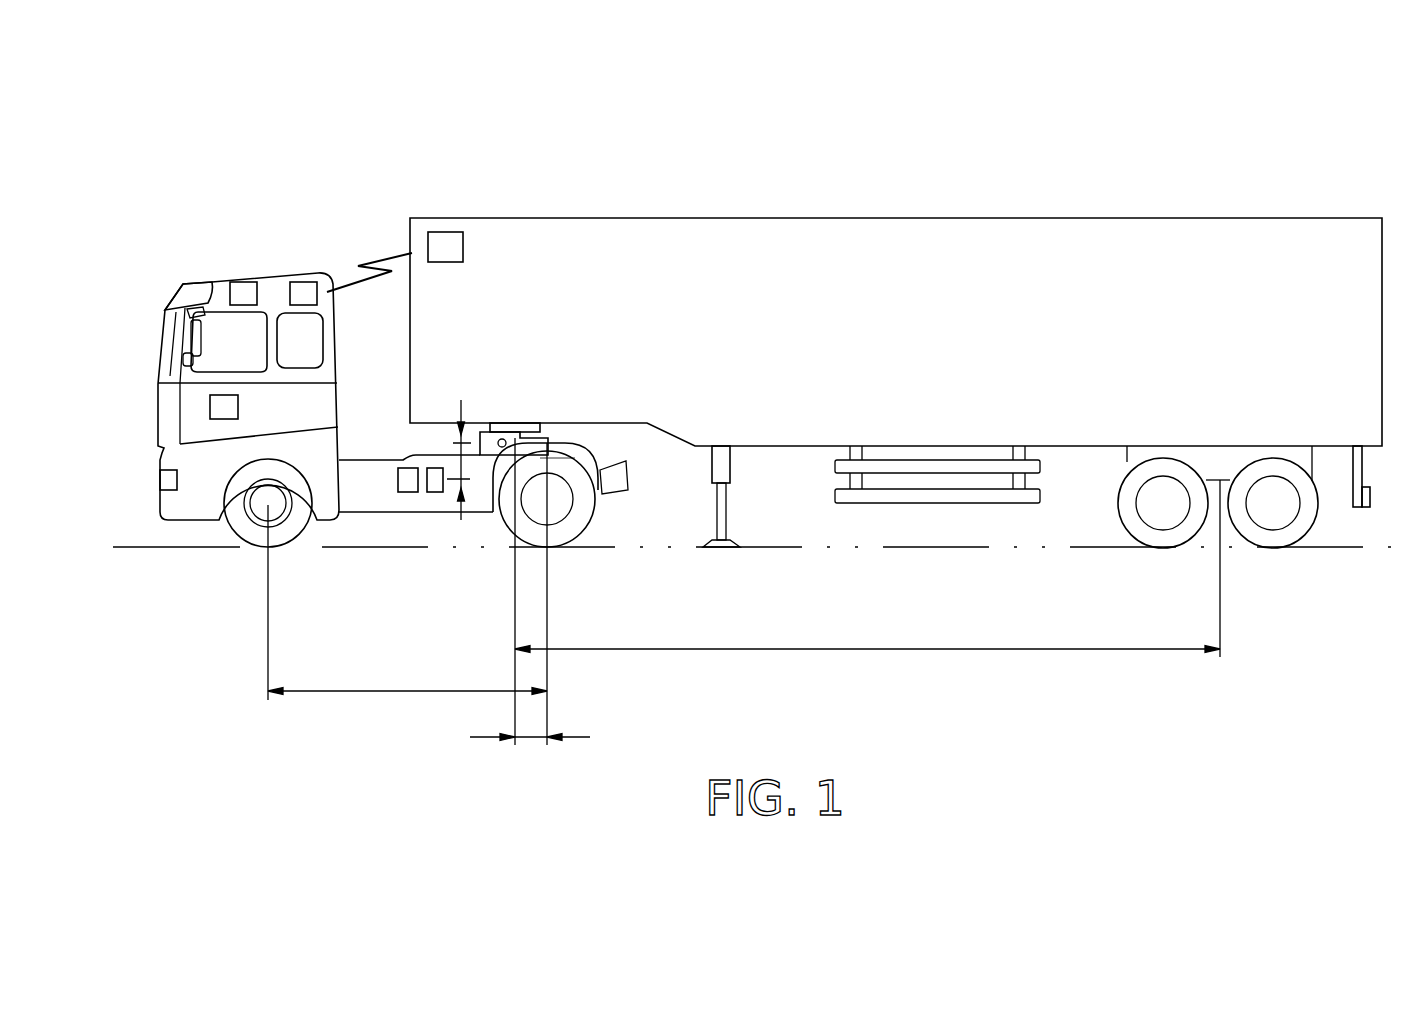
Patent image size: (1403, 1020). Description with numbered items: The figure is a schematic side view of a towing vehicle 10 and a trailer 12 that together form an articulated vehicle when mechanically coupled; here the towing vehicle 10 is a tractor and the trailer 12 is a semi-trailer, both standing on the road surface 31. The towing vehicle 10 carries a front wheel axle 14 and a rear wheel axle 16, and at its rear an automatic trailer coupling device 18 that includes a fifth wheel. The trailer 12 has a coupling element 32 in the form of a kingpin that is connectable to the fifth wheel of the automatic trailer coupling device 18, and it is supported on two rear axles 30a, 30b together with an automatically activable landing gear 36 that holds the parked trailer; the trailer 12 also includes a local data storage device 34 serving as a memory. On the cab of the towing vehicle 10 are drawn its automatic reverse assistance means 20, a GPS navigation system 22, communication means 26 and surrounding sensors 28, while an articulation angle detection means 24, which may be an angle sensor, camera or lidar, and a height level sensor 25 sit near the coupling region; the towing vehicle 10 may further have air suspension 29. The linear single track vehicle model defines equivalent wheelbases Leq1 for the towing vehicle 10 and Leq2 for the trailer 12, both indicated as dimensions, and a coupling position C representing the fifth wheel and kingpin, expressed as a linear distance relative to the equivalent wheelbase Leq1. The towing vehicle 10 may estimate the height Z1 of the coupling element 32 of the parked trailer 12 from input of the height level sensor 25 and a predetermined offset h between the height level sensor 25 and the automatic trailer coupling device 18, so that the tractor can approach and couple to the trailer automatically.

The towing vehicle 10 is at (160, 332).
The trailer 12 is at (1284, 205).
The front wheel axle 14 is at (242, 523).
The rear wheel axle 16 is at (573, 520).
The automatic trailer coupling device 18 is at (493, 455).
The automatic reverse assistance means 20 is at (210, 408).
The GPS navigation system 22 is at (238, 282).
The articulation angle detection means 24 is at (397, 478).
The height level sensor 25 is at (432, 493).
The communication means 26 is at (295, 282).
The surrounding sensors 28 is at (160, 480).
The air suspension 29 is at (568, 458).
The rear axle 30a is at (1163, 537).
The rear axle 30b is at (1277, 537).
The road surface 31 is at (1351, 547).
The coupling element 32 is at (522, 423).
The local data storage device 34 is at (440, 232).
The automatically activable landing gear 36 is at (727, 505).
The height of the coupling element Z1 is at (502, 440).
The predetermined offset h is at (458, 468).
The equivalent wheelbase of the towing vehicle Leq1 is at (407, 706).
The equivalent wheelbase of the trailer Leq2 is at (867, 664).
The coupling position C is at (530, 754).